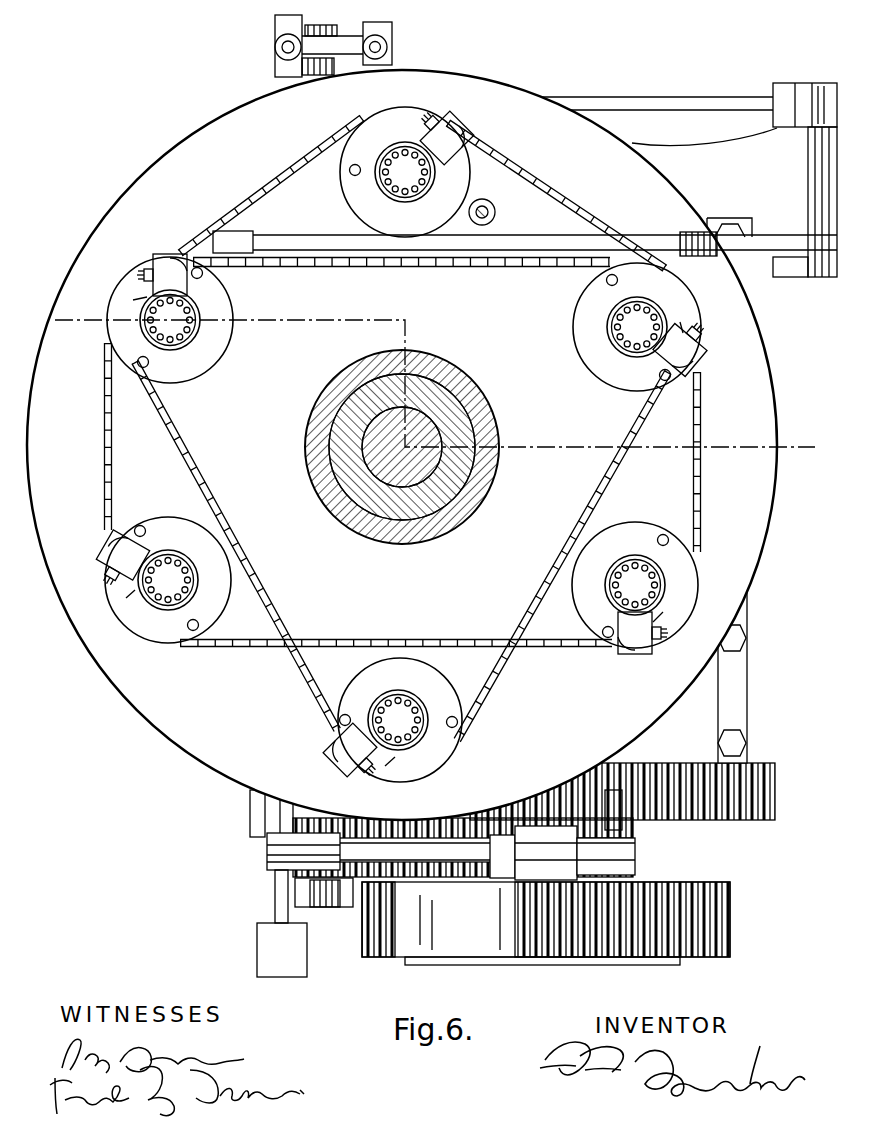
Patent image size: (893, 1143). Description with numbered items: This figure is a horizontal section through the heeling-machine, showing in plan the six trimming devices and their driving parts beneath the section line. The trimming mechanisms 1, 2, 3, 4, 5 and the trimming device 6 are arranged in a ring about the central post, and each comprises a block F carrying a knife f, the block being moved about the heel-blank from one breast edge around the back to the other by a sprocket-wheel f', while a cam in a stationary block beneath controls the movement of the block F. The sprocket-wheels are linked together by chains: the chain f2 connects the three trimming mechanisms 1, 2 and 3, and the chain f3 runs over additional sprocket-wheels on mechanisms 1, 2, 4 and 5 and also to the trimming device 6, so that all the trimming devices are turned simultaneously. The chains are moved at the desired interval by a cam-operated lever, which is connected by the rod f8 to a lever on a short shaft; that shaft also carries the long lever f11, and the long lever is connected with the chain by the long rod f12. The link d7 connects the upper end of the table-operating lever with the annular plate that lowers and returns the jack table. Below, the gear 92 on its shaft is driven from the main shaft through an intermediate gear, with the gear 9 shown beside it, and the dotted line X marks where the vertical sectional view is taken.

The link d7 is at (338, 47).
The trimming device 6 is at (405, 162).
The block F is at (396, 443).
The rod f8 is at (648, 110).
The chain f3 is at (556, 202).
The sprocket-wheel f' is at (402, 446).
The long rod f12 is at (517, 248).
The knife f is at (398, 529).
The trimming mechanism 1 is at (179, 320).
The trimming mechanism 2 is at (627, 327).
The long lever f11 is at (766, 255).
The section line X is at (429, 389).
The chain f2 is at (190, 468).
The trimming mechanism 4 is at (170, 580).
The trimming mechanism 5 is at (626, 585).
The trimming mechanism 3 is at (448, 686).
The gear 9 is at (490, 883).
The gear 92 is at (622, 717).